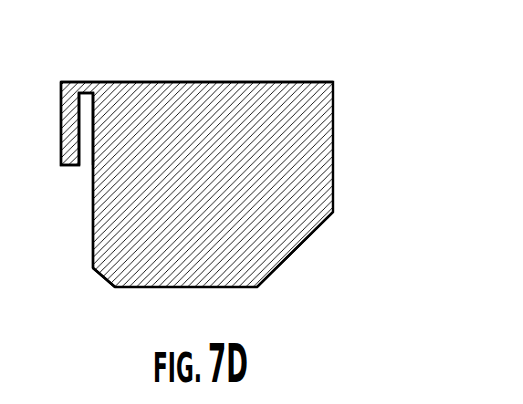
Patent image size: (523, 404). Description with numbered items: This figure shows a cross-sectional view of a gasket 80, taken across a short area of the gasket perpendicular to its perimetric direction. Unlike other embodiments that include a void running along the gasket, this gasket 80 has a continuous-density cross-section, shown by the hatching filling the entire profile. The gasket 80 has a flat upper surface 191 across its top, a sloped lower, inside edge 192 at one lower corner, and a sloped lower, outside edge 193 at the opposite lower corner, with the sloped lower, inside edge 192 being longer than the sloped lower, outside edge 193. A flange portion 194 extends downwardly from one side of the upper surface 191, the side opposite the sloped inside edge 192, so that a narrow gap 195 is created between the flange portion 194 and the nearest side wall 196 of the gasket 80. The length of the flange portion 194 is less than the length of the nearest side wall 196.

The gasket 80 is at (383, 152).
The flat upper surface 191 is at (203, 82).
The sloped lower, inside edge 192 is at (300, 245).
The sloped lower, outside edge 193 is at (105, 280).
The flange portion 194 is at (72, 150).
The narrow gap 195 is at (87, 100).
The side wall 196 is at (93, 203).